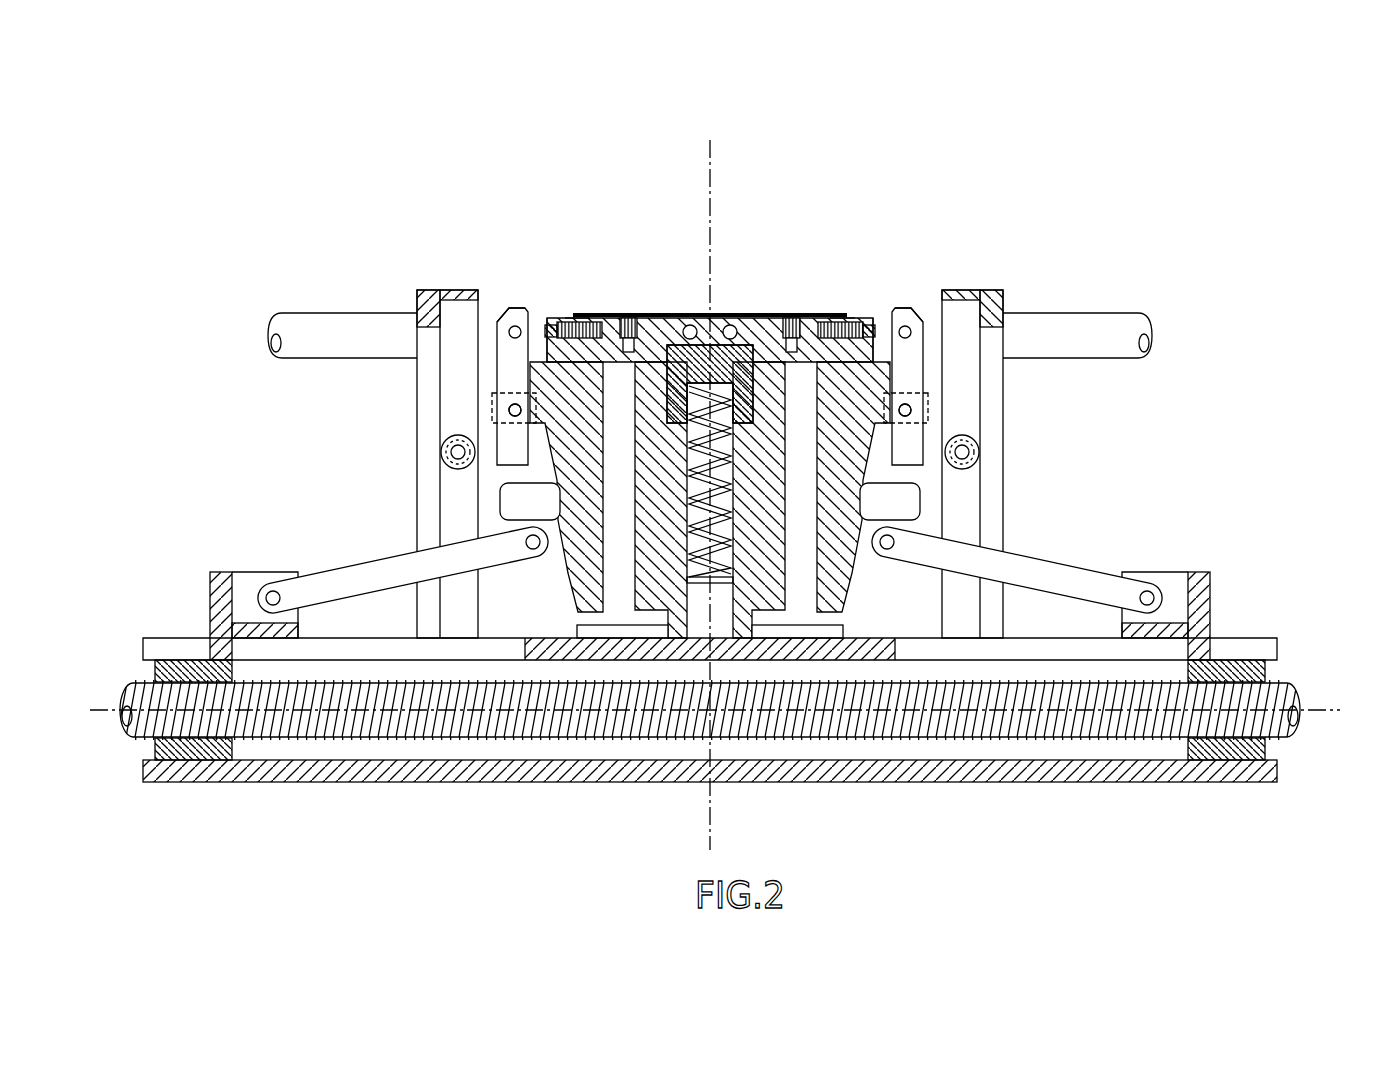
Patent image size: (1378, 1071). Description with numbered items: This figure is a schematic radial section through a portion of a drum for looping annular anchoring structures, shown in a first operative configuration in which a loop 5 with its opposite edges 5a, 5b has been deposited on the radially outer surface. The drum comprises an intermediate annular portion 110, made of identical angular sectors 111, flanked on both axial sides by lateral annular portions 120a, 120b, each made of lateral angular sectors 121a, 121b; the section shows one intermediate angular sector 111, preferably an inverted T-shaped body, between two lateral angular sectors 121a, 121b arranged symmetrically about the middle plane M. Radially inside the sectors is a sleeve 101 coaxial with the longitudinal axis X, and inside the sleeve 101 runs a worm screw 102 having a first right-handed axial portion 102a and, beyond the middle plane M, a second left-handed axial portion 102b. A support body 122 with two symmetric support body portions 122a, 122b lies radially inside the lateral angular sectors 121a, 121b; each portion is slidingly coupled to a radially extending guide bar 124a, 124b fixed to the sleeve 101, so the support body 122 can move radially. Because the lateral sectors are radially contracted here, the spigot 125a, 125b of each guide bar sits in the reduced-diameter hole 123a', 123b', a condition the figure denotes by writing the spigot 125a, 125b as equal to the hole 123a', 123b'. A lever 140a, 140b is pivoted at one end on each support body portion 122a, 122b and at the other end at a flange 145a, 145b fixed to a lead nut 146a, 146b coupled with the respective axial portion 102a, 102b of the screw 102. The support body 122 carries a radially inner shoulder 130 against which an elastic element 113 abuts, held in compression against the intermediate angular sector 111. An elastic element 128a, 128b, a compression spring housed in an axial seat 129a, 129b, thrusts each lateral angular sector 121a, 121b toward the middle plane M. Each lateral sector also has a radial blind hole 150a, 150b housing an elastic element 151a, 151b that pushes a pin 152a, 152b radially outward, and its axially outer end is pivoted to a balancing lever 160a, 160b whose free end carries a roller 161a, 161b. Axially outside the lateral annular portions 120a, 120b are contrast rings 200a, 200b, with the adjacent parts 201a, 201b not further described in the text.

The loop 5 is at (736, 303).
The edge of the loop 5a is at (540, 304).
The edge of the loop 5b is at (880, 304).
The sleeve 101 is at (300, 770).
The worm screw 102 is at (690, 727).
The first right-handed axial portion 102a is at (424, 760).
The second left-handed axial portion 102b is at (997, 760).
The intermediate annular portion 110 is at (693, 285).
The intermediate angular sector 111 is at (713, 316).
The elastic element 113 is at (766, 605).
The lateral annular portion 120a is at (515, 364).
The lateral annular portion 120b is at (903, 371).
The lateral angular sector 121a is at (677, 318).
The lateral angular sector 121b is at (755, 318).
The support body 122 is at (558, 582).
The support body portion 122a is at (545, 485).
The support body portion 122b is at (875, 485).
The guide bar 124a is at (528, 538).
The guide bar 124b is at (892, 538).
The spigot 125a is at (396, 411).
The hole 123a' is at (396, 411).
The spigot 125b is at (1026, 412).
The hole 123b' is at (1026, 412).
The elastic element 128a is at (562, 316).
The elastic element 128b is at (858, 316).
The axial seat 129a is at (508, 306).
The axial seat 129b is at (912, 306).
The shoulder 130 is at (740, 595).
The lever 140a is at (316, 590).
The lever 140b is at (1103, 590).
The flange 145a is at (215, 577).
The flange 145b is at (1205, 577).
The lead nut 146a is at (185, 672).
The lead nut 146b is at (1235, 672).
The radial blind hole 150a is at (619, 298).
The radial blind hole 150b is at (797, 298).
The elastic element 151a is at (577, 318).
The elastic element 151b is at (770, 318).
The pin 152a is at (638, 318).
The pin 152b is at (827, 318).
The balancing lever 160a is at (500, 374).
The balancing lever 160b is at (920, 374).
The roller 161a is at (441, 452).
The roller 161b is at (979, 452).
The contrast ring 200a is at (422, 300).
The contrast ring 200b is at (998, 300).
The rod a 201a is at (288, 330).
The rod b 201b is at (1132, 330).
The middle plane M is at (708, 140).
The longitudinal axis X is at (715, 710).